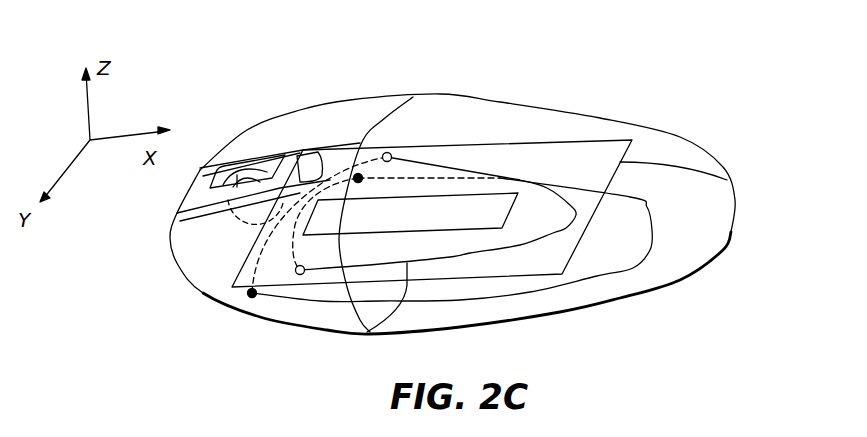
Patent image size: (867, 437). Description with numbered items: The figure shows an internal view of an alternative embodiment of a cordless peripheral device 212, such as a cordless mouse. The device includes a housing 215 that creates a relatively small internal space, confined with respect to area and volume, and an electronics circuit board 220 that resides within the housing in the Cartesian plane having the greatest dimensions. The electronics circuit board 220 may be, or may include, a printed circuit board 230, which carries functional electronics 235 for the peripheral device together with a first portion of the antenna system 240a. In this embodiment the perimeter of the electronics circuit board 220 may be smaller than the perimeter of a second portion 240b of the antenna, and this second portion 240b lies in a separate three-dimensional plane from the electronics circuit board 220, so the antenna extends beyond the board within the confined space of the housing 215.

The cordless peripheral device 212 is at (785, 321).
The housing 215 is at (687, 137).
The electronics circuit board 220 is at (728, 180).
The printed circuit board 230 is at (567, 240).
The functional electronics 235 is at (483, 202).
The first portion of the antenna system 240a is at (371, 331).
The second portion of the antenna 240b is at (290, 300).